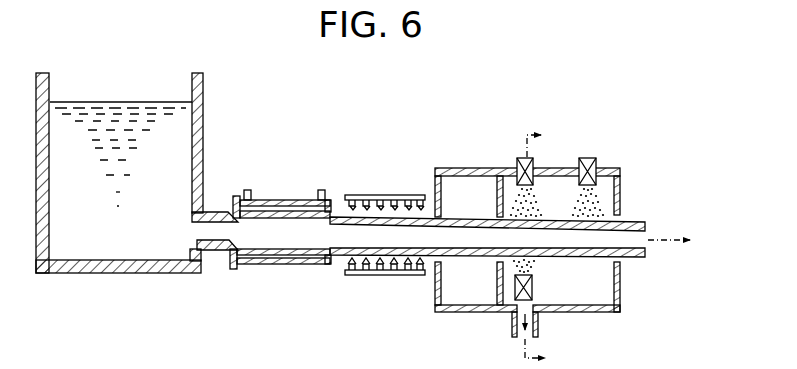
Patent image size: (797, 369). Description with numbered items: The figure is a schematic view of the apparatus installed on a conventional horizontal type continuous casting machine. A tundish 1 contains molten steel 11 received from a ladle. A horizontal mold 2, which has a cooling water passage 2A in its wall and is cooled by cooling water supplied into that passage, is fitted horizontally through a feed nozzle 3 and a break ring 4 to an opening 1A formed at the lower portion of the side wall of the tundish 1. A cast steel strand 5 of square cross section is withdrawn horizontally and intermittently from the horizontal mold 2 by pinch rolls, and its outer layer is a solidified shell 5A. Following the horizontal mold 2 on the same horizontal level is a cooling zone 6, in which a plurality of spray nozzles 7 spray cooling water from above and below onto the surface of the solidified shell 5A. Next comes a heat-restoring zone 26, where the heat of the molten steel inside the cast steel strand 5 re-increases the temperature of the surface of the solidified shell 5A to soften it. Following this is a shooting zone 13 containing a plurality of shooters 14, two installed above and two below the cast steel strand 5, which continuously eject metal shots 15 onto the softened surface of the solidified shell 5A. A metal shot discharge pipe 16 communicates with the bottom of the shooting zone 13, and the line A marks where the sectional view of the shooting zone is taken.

The tundish 1 is at (204, 90).
The opening 1A is at (198, 232).
The molten steel 11 is at (76, 110).
The horizontal mold 2 is at (265, 200).
The cooling water passage 2A is at (297, 205).
The feed nozzle 3 is at (216, 212).
The break ring 4 is at (236, 220).
The cast steel strand 5 is at (639, 218).
The solidified shell 5A is at (643, 232).
The cooling zone 6 is at (362, 194).
The spray nozzles 7 is at (388, 210).
The shooting zone 13 is at (562, 176).
The shooters 14 is at (518, 158).
The metal shots 15 is at (536, 206).
The metal shot discharge pipe 16 is at (539, 321).
The heat-restoring zone 26 is at (460, 185).
The section line A— A is at (536, 135).